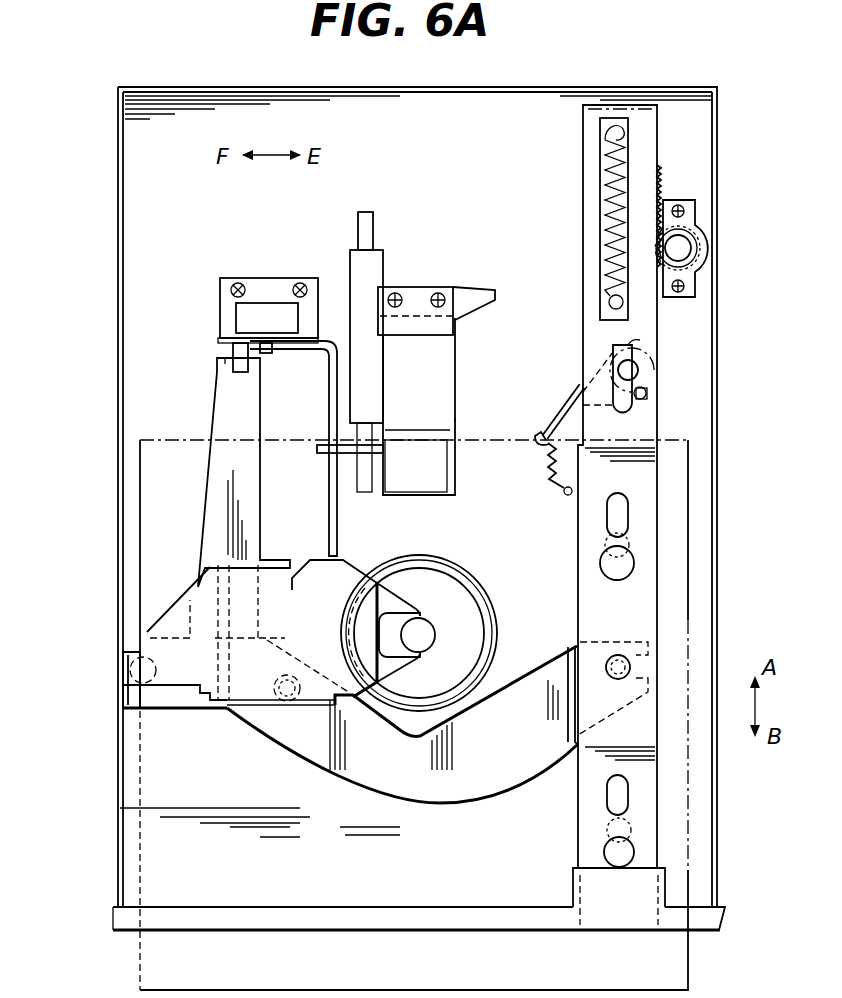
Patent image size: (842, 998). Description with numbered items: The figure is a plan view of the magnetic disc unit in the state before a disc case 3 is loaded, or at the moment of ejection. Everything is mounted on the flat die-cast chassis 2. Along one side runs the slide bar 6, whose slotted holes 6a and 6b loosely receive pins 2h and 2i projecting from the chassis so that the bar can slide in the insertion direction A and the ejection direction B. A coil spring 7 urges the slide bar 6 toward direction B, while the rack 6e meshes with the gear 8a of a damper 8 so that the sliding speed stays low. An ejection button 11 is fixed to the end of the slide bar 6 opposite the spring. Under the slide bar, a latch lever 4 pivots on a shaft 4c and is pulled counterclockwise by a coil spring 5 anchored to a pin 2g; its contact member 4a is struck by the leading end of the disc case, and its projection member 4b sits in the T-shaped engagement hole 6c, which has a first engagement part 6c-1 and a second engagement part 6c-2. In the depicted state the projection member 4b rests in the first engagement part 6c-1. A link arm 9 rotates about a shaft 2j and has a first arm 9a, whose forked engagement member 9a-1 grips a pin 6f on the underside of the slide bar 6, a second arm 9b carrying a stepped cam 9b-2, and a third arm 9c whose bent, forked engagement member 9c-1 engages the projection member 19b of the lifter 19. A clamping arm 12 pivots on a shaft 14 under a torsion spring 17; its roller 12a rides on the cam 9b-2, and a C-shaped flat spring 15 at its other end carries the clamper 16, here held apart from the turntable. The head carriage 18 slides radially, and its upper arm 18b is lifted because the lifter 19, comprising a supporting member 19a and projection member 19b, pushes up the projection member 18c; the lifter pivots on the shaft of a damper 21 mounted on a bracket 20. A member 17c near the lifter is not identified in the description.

The chassis 2 is at (155, 848).
The pin 2g is at (564, 495).
The pin 2h is at (631, 829).
The pin 2i is at (630, 549).
The shaft 2j is at (290, 705).
The disc case 3 is at (140, 940).
The latch lever 4 is at (578, 388).
The contact member 4a is at (538, 431).
The projection member 4b is at (650, 399).
The shaft 4c is at (652, 356).
The coil spring 5 is at (553, 466).
The slide bar 6 is at (657, 760).
The slotted hole 6a is at (615, 803).
The slotted hole 6b is at (612, 523).
The engagement hole 6c is at (640, 370).
The first engagement part 6c-1 is at (648, 393).
The second engagement part 6c-2 is at (640, 340).
The rack 6e is at (662, 185).
The pin 6f is at (618, 655).
The coil spring 7 is at (607, 193).
The damper 8 is at (704, 252).
The gear 8a is at (694, 228).
The link arm 9 is at (352, 801).
The first arm 9a is at (572, 746).
The engagement member 9a-1 is at (650, 650).
The second arm 9b is at (170, 700).
The cam 9b-2 is at (128, 690).
The third arm 9c is at (212, 498).
The engagement member 9c-1 is at (224, 372).
The ejection button 11 is at (612, 920).
The clamping arm 12 is at (257, 690).
The roller 12a is at (125, 665).
The shaft 14 is at (281, 677).
The C-shaped flat spring 15 is at (418, 605).
The clamper 16 is at (467, 620).
The torsion spring 17 is at (233, 648).
The arm of lever 17c is at (322, 473).
The head carriage 18 is at (465, 384).
The upper arm 18b is at (448, 423).
The projection member 18c is at (318, 448).
The lifter 19 is at (313, 404).
The supporting member 19a is at (296, 348).
The projection member 19b is at (235, 352).
The bracket 20 is at (259, 284).
The damper 21 is at (292, 318).